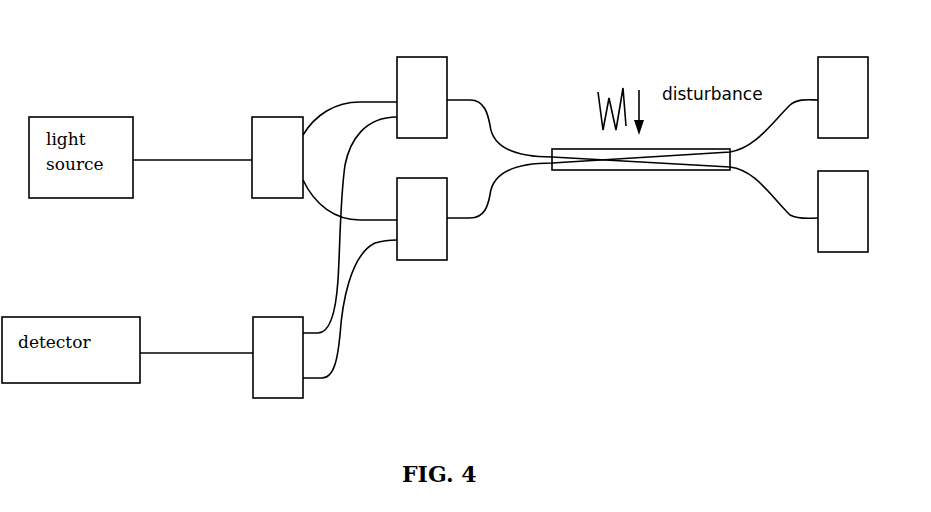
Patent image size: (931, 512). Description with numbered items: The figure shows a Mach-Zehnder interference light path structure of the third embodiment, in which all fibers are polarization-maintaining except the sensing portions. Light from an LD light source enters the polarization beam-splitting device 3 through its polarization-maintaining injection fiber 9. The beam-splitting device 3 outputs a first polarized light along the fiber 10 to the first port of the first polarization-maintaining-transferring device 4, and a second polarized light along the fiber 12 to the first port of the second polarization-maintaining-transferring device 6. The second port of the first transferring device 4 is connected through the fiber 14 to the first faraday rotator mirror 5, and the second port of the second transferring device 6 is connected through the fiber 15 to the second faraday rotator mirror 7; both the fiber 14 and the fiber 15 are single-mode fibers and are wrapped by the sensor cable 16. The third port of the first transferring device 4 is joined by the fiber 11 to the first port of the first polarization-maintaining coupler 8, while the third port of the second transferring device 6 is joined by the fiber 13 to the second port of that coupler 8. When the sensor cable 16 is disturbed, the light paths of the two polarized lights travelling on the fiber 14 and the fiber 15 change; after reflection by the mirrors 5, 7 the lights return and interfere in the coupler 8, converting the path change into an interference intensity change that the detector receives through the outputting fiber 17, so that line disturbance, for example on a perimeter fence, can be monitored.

The polarization beam-splitting device 3 is at (277, 157).
The first polarization-maintaining-transferring device 4 is at (422, 97).
The first faraday rotator mirror 5 is at (843, 97).
The second polarization-maintaining-transferring device 6 is at (422, 219).
The second faraday rotator mirror 7 is at (843, 211).
The first polarization-maintaining coupler 8 is at (278, 357).
The injection fiber 9 is at (192, 135).
The fiber between polarization beam-splitting device and first polarization-maintain 10 is at (325, 98).
The fiber between first polarization-maintaining-transferring device and first polar 11 is at (361, 138).
The fiber between polarization beam-splitting device and second polarization-maintai 12 is at (325, 220).
The fiber between second polarization-maintaining-transferring device and first pola 13 is at (378, 257).
The fiber between first polarization-maintaining-transferring device and first farad 14 is at (497, 100).
The fiber between second polarization-maintaining-transferring device and second far 15 is at (490, 198).
The sensor cable 16 is at (673, 178).
The outputting fiber 17 is at (196, 332).